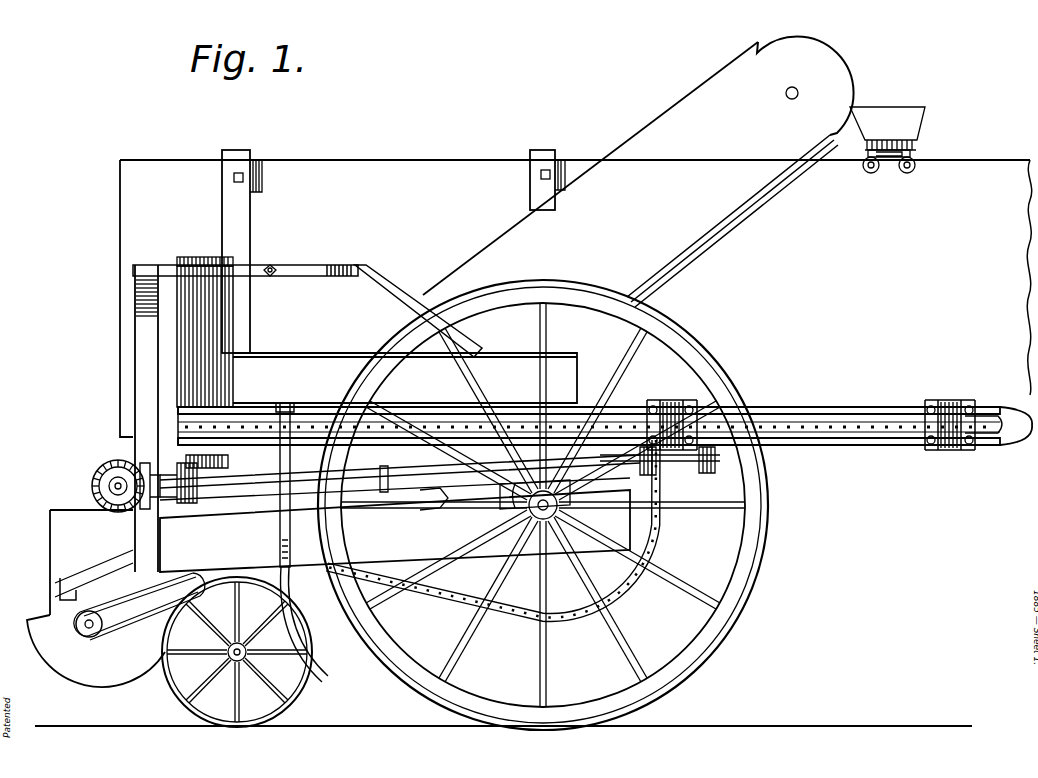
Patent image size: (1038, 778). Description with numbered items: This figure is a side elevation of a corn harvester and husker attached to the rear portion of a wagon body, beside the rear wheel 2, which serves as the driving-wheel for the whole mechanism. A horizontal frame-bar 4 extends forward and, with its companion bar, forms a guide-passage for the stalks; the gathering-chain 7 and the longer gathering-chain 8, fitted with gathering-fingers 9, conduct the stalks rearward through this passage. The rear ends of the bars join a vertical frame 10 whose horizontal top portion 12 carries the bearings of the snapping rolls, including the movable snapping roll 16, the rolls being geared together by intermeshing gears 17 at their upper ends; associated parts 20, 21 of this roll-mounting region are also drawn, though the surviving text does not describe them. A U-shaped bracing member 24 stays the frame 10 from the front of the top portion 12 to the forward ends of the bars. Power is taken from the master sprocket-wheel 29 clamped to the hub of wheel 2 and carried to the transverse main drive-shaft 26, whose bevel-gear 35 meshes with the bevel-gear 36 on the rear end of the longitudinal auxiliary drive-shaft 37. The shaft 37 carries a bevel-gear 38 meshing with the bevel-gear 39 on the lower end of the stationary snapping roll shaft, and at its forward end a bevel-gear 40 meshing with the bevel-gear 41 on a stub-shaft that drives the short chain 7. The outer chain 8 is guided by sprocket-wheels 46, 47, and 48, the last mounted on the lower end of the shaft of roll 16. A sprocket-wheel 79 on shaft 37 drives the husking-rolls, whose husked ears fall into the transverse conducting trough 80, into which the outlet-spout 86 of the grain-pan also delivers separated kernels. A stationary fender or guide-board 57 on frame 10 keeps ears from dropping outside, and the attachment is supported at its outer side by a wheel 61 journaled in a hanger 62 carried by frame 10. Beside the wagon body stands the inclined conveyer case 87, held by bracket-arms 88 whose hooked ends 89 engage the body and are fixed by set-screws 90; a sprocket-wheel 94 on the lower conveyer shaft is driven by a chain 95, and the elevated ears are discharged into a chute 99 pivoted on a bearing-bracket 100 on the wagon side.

The rear wheel 2 is at (542, 281).
The frame-bar 4 is at (486, 407).
The gathering-chain 7 is at (368, 162).
The gathering-chain 8 is at (824, 406).
The gathering-fingers 9 is at (985, 416).
The vertical frame 10 is at (140, 338).
The horizontal top portion 12 is at (333, 260).
The snapping roll 16 is at (233, 322).
The intermeshing gears 17 is at (196, 258).
The pivot 20 is at (275, 276).
The platform 21 is at (395, 525).
The bracing member 24 is at (384, 268).
The main drive-shaft 26 is at (102, 470).
The master sprocket-wheel 29 is at (632, 580).
The bevel-gear 35 is at (92, 486).
The bevel-gear 36 is at (178, 495).
The auxiliary drive-shaft 37 is at (566, 470).
The bevel-gear 38 is at (214, 492).
The bevel-gear 39 is at (240, 455).
The bevel-gear 40 is at (712, 476).
The bevel-gear 41 is at (745, 458).
The sprocket-wheel 46 is at (938, 400).
The sprocket-wheel 47 is at (686, 403).
The sprocket-wheel 48 is at (178, 425).
The fender or guide-board 57 is at (405, 378).
The wheel or roller 61 is at (311, 678).
The hanger 62 is at (300, 636).
The sprocket-wheel 79 is at (658, 478).
The conducting trough or chute 80 is at (52, 527).
The outlet-spout 86 is at (60, 582).
The conveyer frame or case 87 is at (698, 86).
The bracket-arms 88 is at (250, 218).
The hooked ends 89 is at (236, 153).
The set-screws 90 is at (243, 178).
The sprocket-wheel 94 is at (82, 636).
The chain 95 is at (148, 628).
The chute 99 is at (884, 101).
The bearing-bracket 100 is at (920, 152).